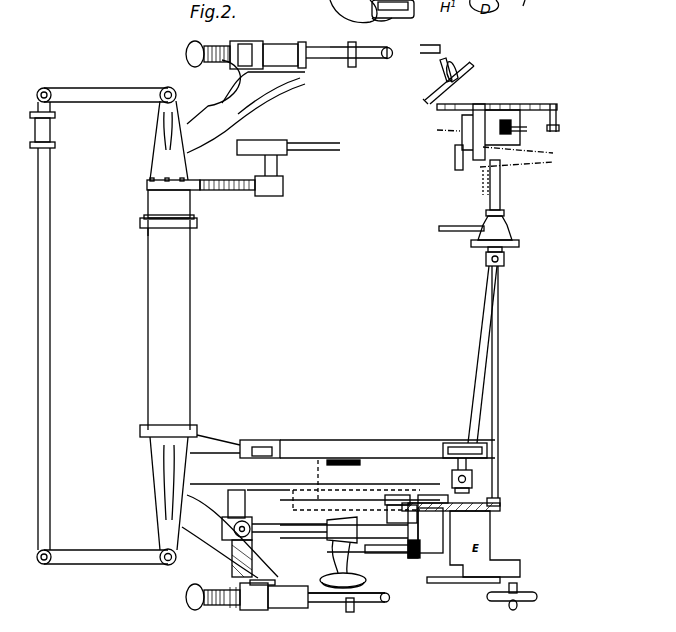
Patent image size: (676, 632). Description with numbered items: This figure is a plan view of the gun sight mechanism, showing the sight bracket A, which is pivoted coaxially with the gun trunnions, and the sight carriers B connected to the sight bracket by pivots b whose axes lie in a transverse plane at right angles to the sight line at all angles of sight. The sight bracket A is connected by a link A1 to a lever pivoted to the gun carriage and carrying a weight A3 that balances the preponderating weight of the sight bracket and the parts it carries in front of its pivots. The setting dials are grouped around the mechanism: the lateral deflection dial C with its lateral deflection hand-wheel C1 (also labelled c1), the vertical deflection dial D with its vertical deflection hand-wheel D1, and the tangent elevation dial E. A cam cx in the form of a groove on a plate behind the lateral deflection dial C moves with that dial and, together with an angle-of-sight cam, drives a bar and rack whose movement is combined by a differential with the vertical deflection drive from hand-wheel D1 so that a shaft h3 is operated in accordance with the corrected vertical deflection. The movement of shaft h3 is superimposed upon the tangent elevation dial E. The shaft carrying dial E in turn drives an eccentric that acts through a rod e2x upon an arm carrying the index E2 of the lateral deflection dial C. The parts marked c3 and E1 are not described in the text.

The pivot b is at (166, 90).
The sight carrier B is at (195, 96).
The sight bracket A is at (180, 318).
The link A1 is at (283, 448).
The weight A3 is at (318, 446).
The clamp piece c3 is at (396, 498).
The rod e2x is at (424, 502).
The lateral deflection dial C is at (395, 560).
The index of the lateral deflection dial E2 is at (413, 560).
The lateral deflection hand-wheel C1 is at (366, 598).
The base plate E1 is at (500, 506).
The vertical deflection dial D is at (462, 583).
The vertical deflection hand-wheel D1 is at (530, 598).
The shaft h3 is at (478, 482).
The tangent elevation dial E is at (483, 104).
The cam cx is at (495, 198).
The lateral deflection hand-wheel c1 is at (450, 238).